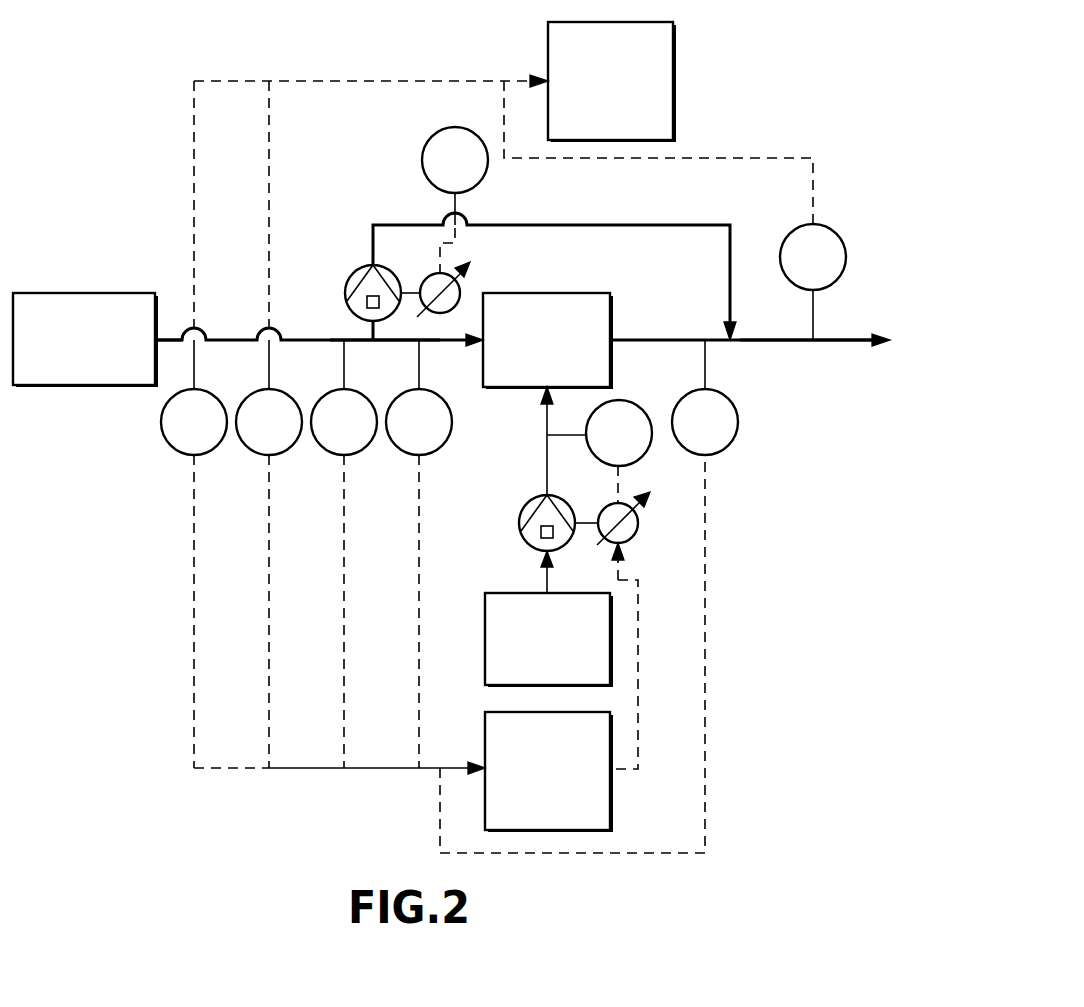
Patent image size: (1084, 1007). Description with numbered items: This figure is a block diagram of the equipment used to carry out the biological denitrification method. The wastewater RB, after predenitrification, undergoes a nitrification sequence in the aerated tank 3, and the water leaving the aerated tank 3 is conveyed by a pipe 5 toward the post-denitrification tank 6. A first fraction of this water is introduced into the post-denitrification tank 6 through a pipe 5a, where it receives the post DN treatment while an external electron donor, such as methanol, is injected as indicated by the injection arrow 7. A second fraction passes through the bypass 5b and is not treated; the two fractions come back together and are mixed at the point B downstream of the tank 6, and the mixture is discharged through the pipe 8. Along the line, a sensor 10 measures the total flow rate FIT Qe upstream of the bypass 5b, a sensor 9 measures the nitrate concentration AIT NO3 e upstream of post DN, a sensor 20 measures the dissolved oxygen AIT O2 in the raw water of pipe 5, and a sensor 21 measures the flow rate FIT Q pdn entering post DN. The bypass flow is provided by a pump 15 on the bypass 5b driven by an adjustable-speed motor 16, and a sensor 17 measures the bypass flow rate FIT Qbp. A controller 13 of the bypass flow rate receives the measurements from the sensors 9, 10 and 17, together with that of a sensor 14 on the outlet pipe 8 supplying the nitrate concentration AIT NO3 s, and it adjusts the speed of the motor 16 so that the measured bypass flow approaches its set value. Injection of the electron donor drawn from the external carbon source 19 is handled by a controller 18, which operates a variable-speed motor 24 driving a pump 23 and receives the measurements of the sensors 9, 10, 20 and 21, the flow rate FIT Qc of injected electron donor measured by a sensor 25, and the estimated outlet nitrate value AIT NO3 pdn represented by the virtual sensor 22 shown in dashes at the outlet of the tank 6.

The aerated tank 3 is at (107, 292).
The wastewater RB is at (163, 337).
The pipe 5 is at (312, 338).
The pipe 5a is at (408, 345).
The bypass 5b is at (398, 224).
The post-denitrification tank 6 is at (613, 300).
The injection of electron donor 7 is at (545, 420).
The pipe 8 is at (768, 337).
The mixing point B is at (728, 342).
The sensor 9 is at (250, 456).
The sensor 10 is at (167, 445).
The controller of the bypass flow rate 13 is at (675, 73).
The sensor 14 is at (836, 237).
The pump 15 is at (352, 278).
The adjustable-speed motor 16 is at (462, 285).
The sensor 17 is at (485, 177).
The controller 18 is at (612, 797).
The external carbon source 19 is at (485, 637).
The sensor 20 is at (331, 456).
The sensor 21 is at (403, 456).
The virtual sensor 22 is at (723, 453).
The pump 23 is at (523, 545).
The variable-speed motor 24 is at (638, 540).
The sensor 25 is at (636, 403).